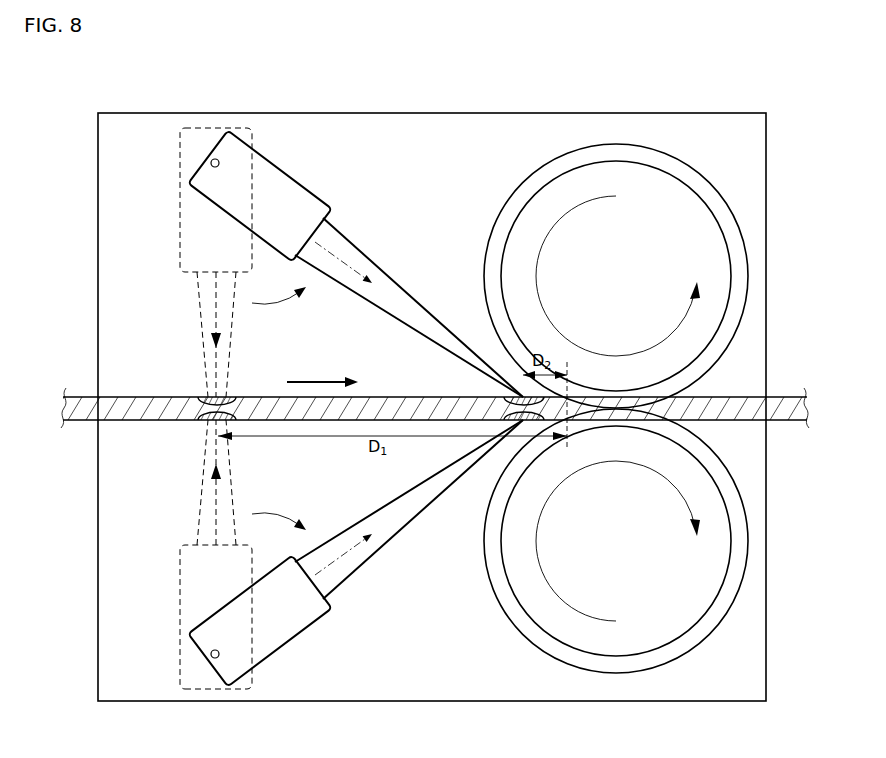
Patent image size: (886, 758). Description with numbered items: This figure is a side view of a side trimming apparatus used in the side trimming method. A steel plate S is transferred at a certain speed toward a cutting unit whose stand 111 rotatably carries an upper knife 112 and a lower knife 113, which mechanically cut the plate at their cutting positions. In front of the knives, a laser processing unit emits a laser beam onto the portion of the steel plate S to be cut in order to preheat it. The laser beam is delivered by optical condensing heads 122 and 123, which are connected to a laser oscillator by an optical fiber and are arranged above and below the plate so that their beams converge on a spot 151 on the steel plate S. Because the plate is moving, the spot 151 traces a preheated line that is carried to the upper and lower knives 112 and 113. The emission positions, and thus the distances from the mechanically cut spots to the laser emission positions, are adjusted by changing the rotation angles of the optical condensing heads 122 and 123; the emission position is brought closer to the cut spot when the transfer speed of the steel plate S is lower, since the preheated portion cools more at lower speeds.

The stand 111 is at (757, 160).
The upper knife 112 is at (742, 272).
The lower knife 113 is at (738, 537).
The optical condensing head 122 is at (265, 178).
The optical condensing head 123 is at (265, 640).
The spot 151 is at (202, 396).
The steel plate S is at (76, 408).